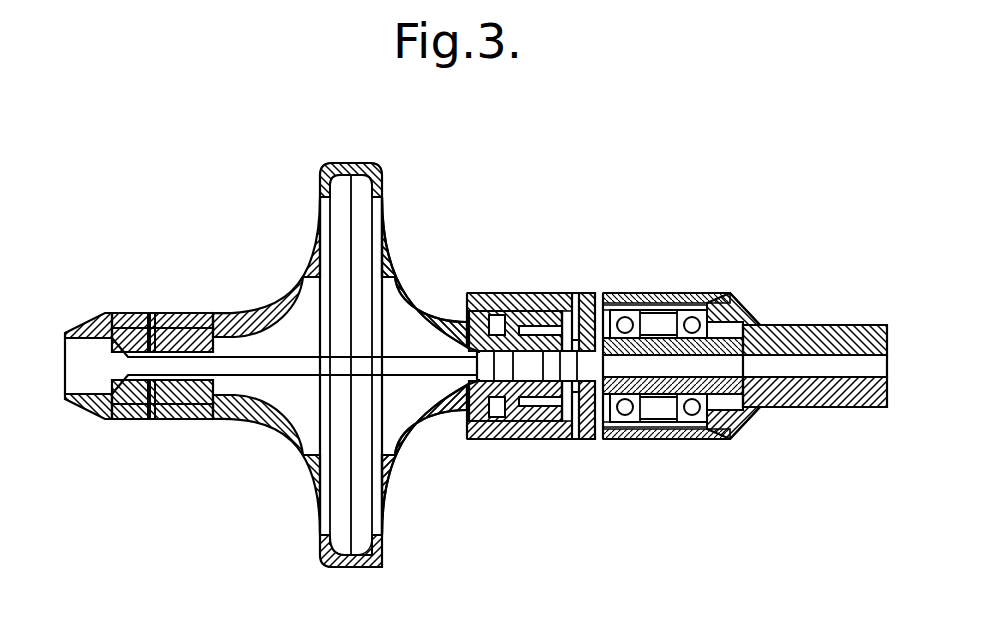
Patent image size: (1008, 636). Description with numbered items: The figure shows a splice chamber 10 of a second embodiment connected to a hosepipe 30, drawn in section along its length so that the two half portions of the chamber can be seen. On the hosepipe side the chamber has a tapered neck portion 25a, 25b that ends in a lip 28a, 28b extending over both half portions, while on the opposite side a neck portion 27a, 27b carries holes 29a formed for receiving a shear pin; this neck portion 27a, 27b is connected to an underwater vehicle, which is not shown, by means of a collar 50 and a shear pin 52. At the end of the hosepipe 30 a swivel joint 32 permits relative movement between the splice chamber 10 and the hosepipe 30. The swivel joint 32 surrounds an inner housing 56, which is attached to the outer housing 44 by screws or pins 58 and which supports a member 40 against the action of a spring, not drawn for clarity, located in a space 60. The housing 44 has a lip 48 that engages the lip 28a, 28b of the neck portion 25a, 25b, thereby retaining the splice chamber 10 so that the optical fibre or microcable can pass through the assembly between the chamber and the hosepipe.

The splice chamber 10 is at (306, 557).
The tapered neck portion 25a is at (403, 305).
The tapered neck portion 25b is at (422, 413).
The neck portion 27a is at (176, 313).
The neck portion 27b is at (190, 419).
The lip 28a is at (467, 312).
The lip 28b is at (456, 398).
The hole 29a is at (151, 313).
The hosepipe 30 is at (855, 325).
The swivel joint 32 is at (665, 410).
The member 40 is at (532, 295).
The outer housing 44 is at (536, 440).
The lip 48 is at (465, 442).
The collar 50 is at (100, 420).
The shear pin 52 is at (155, 419).
The inner housing 56 is at (628, 308).
The screws or pins 58 is at (577, 295).
The space 60 is at (518, 440).